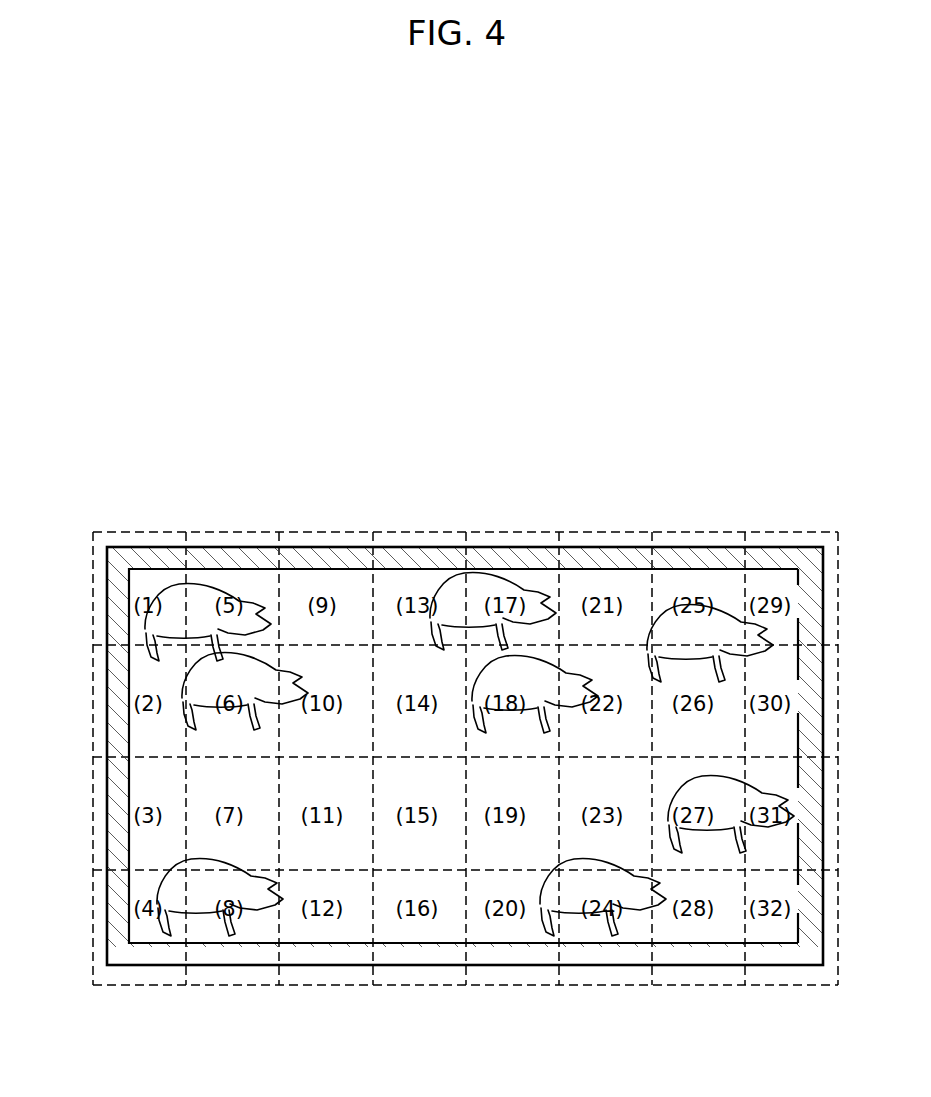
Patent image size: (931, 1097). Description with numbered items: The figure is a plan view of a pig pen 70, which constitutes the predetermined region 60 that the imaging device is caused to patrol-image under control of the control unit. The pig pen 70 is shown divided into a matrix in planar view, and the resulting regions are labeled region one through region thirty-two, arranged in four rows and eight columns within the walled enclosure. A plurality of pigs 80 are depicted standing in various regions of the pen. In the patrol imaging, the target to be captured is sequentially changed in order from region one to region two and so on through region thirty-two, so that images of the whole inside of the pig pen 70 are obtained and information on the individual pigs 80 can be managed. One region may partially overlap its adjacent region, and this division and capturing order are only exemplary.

The predetermined region 60 is at (465, 777).
The pig pen 70 is at (152, 927).
The pig 80 is at (202, 915).